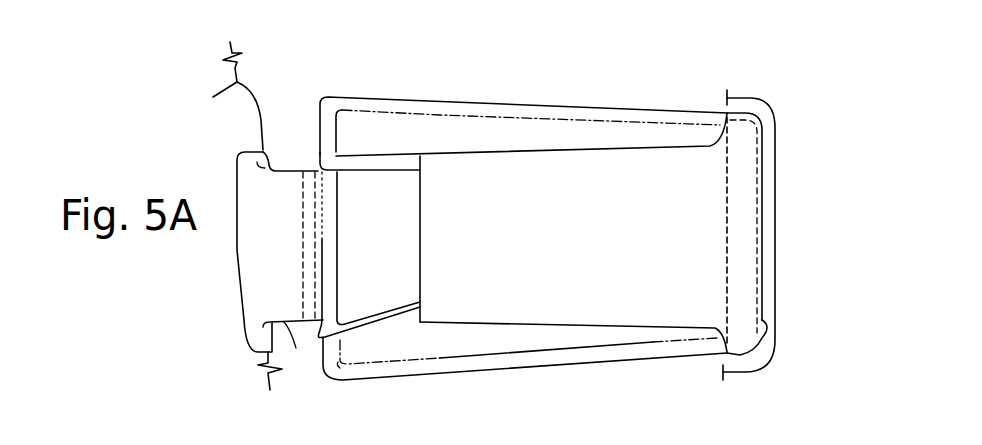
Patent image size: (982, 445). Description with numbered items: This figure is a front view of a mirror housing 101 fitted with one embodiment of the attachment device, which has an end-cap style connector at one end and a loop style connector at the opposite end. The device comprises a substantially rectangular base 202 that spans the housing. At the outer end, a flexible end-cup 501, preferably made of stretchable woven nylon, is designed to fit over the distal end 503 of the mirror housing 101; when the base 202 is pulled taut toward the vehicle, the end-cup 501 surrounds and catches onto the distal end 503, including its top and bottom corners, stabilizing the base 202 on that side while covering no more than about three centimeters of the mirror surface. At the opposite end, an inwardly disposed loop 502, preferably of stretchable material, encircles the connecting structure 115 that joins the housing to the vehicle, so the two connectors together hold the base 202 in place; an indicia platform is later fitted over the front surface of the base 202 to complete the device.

The mirror housing 101 is at (500, 105).
The connecting structure 115 is at (268, 216).
The base 202 is at (658, 225).
The flexible end-cup 501 is at (776, 222).
The inwardly disposed loop 502 is at (368, 322).
The distal end 503 is at (763, 334).